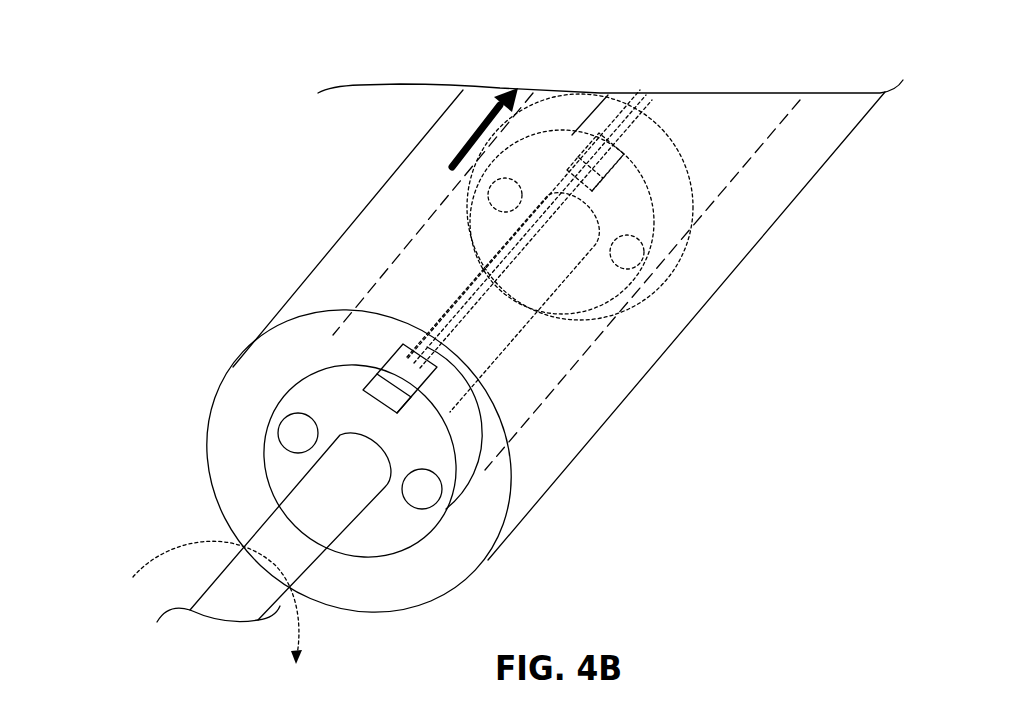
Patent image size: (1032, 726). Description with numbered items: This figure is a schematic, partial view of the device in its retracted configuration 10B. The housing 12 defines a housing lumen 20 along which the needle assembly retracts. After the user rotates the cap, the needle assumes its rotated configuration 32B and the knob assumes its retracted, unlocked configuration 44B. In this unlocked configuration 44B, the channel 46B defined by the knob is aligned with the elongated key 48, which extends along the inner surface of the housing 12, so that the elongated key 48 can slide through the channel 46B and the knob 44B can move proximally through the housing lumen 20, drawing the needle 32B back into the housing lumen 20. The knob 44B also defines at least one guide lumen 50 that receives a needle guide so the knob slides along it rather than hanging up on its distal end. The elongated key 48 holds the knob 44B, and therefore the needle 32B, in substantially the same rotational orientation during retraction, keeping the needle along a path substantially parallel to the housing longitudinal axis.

The retracted configuration 10B is at (162, 62).
The housing 12 is at (282, 293).
The housing lumen 20 is at (733, 138).
The rotated configuration of needle 32B is at (290, 563).
The retracted configuration of knob 44B is at (263, 443).
The channel 46B is at (377, 377).
The elongated key 48 is at (453, 293).
The guide lumen 50 is at (432, 480).